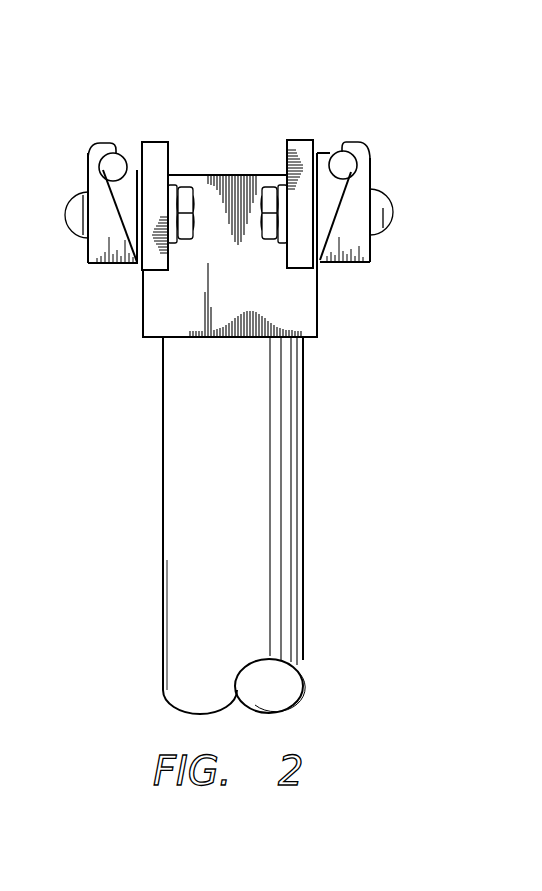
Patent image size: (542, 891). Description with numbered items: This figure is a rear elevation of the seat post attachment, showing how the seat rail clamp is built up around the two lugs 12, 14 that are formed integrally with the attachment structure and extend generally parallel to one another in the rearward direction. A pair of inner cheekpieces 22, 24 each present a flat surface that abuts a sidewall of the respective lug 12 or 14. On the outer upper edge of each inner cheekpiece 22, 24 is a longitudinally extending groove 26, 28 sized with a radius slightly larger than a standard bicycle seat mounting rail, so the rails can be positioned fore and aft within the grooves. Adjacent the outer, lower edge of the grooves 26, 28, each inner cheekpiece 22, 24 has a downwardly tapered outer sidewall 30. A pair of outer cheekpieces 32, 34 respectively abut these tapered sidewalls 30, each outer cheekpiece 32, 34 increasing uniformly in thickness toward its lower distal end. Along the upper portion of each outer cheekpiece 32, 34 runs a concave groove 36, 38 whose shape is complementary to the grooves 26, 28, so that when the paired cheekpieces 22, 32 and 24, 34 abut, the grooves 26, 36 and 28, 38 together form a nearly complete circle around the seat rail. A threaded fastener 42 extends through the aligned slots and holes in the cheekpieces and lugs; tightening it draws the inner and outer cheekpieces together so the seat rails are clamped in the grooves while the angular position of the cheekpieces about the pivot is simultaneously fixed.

The lug 12 is at (157, 142).
The lug 14 is at (298, 140).
The inner cheekpiece 22 is at (131, 153).
The inner cheekpiece 24 is at (325, 153).
The longitudinally extending groove 26 is at (110, 165).
The longitudinally extending groove 28 is at (353, 152).
The downwardly tapered outer sidewall 30 is at (105, 263).
The outer cheekpiece 32 is at (128, 267).
The outer cheekpiece 34 is at (358, 262).
The concave groove 36 is at (127, 153).
The concave groove 38 is at (368, 180).
The threaded fastener 42 is at (385, 213).